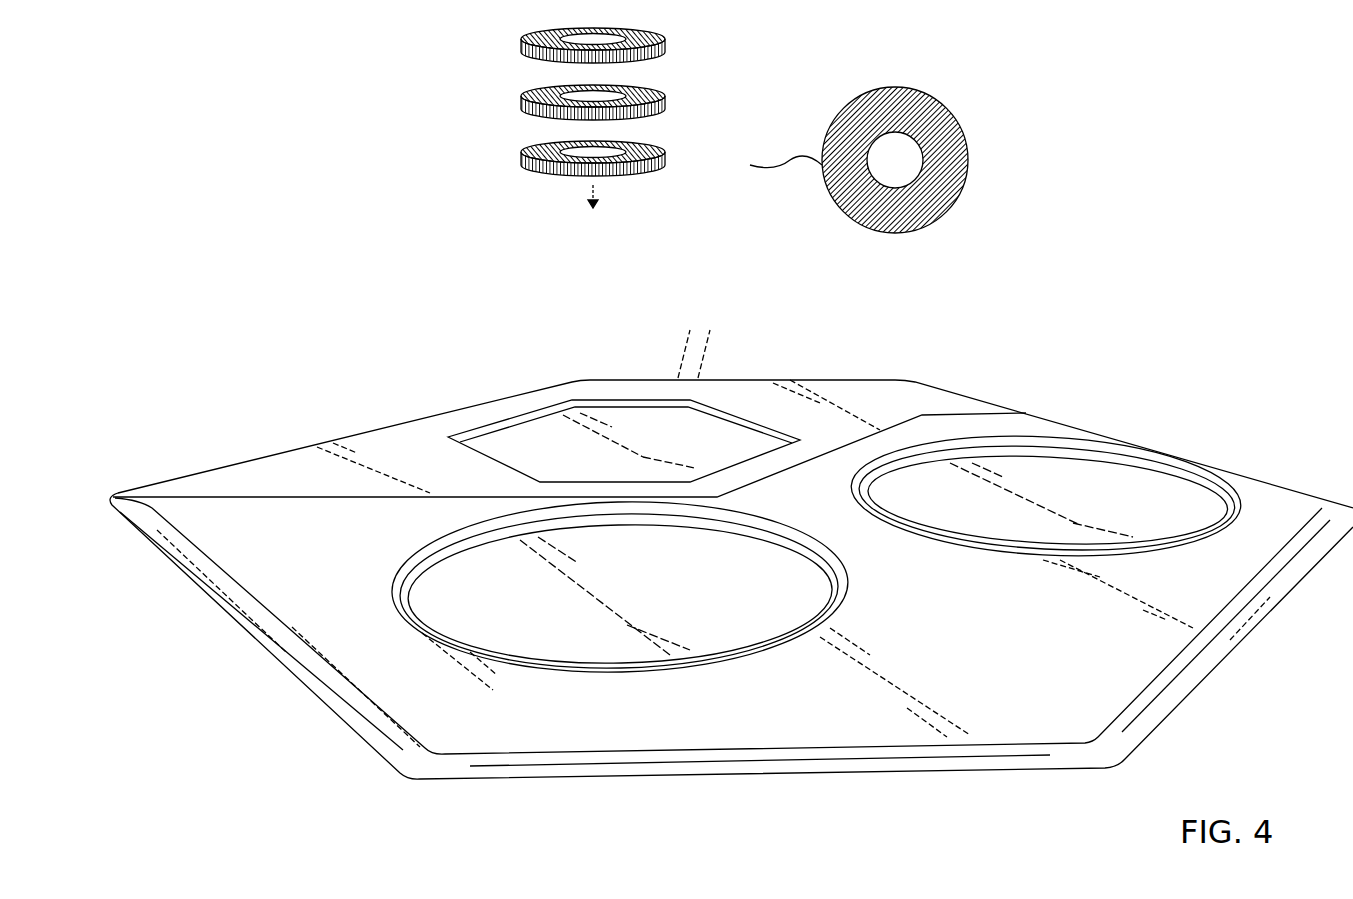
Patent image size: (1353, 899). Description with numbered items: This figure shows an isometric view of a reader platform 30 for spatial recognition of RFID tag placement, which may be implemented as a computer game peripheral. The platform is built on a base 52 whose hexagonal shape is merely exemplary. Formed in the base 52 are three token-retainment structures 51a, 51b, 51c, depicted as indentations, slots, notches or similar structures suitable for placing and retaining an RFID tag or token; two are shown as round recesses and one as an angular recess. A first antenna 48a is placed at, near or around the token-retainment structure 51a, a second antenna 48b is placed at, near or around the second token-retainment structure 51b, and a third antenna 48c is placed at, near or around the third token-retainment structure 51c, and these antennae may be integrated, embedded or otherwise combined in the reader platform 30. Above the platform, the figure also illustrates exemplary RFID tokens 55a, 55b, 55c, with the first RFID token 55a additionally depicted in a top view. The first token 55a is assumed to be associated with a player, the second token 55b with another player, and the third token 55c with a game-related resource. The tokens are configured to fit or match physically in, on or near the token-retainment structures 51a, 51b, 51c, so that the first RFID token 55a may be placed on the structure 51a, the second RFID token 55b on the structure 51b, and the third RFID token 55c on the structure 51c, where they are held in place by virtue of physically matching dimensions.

The reader platform 30 is at (298, 748).
The base 52 is at (717, 583).
The first antenna 48a is at (978, 540).
The second antenna 48b is at (410, 552).
The third antenna 48c is at (717, 409).
The token-retainment structure 51a is at (1048, 500).
The second token-retainment structure 51b is at (620, 594).
The third token-retainment structure 51c is at (629, 440).
The first RFID token 55a is at (749, 169).
The second RFID token 55b is at (749, 112).
The third RFID token 55c is at (749, 56).